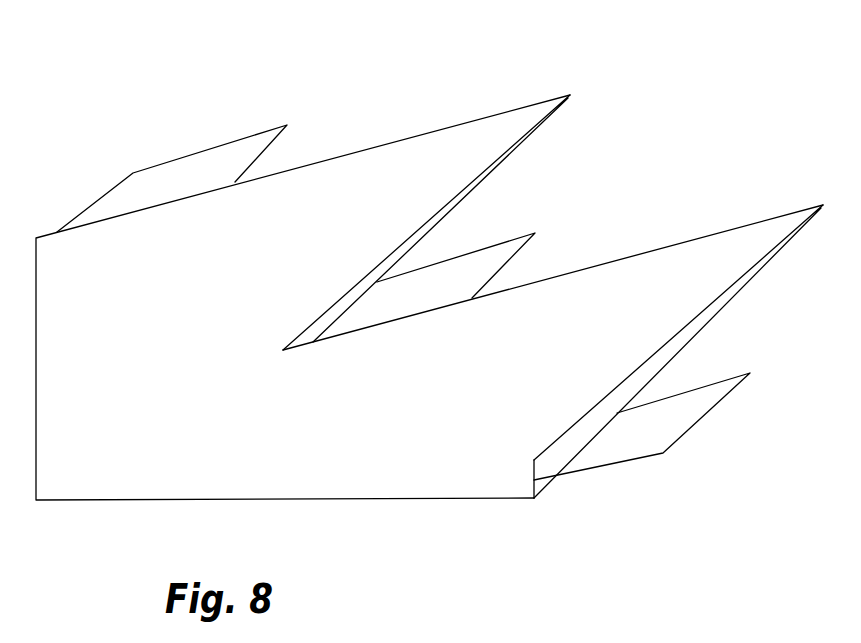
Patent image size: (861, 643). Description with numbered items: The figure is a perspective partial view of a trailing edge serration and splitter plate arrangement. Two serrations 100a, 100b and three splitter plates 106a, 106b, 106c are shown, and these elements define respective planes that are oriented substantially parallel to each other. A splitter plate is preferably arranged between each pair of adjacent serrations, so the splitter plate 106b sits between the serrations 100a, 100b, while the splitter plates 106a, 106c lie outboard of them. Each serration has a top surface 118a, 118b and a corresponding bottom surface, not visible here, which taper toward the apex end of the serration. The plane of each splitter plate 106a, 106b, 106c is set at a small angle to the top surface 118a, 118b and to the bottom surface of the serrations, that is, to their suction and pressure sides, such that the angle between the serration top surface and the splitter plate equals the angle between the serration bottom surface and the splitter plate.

The serration 100a is at (503, 122).
The serration 100b is at (775, 232).
The splitter plate 106a is at (250, 150).
The splitter plate 106b is at (502, 257).
The splitter plate 106c is at (720, 390).
The top surface 118a is at (423, 191).
The top surface 118b is at (645, 313).